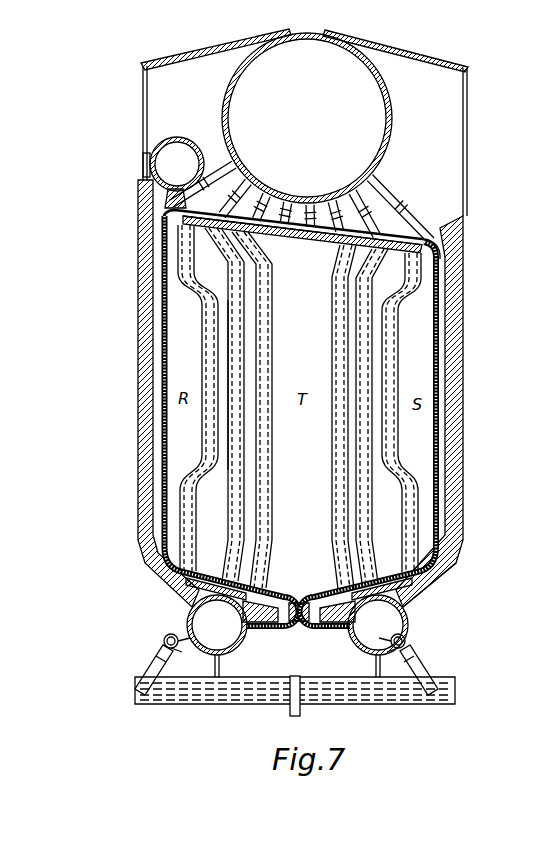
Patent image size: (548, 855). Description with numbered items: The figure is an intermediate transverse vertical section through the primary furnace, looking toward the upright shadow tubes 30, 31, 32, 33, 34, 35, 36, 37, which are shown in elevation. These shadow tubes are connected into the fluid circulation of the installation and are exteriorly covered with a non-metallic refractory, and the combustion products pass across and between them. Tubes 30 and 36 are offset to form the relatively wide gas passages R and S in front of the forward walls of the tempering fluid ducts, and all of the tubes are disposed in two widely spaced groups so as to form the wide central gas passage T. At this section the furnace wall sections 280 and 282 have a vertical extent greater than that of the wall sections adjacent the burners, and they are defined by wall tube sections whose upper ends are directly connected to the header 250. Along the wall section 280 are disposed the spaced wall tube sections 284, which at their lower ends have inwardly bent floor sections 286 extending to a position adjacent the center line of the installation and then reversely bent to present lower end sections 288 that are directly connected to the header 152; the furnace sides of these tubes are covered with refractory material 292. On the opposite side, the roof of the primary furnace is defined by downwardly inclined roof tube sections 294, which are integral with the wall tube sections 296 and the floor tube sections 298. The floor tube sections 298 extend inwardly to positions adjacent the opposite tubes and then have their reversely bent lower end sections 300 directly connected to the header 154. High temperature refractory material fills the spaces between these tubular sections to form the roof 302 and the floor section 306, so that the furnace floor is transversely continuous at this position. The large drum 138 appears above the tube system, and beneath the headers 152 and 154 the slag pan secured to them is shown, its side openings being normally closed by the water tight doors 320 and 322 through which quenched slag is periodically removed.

The steam drum 138 is at (233, 93).
The header 250 is at (180, 137).
The roof tube sections 294 is at (392, 200).
The roof 302 is at (300, 240).
The shadow tube 31 is at (441, 254).
The shadow tube 30 is at (425, 285).
The shadow tube 33 is at (346, 290).
The shadow tube 32 is at (350, 322).
The furnace wall section 280 is at (150, 322).
The wall tube sections 284 is at (165, 360).
The furnace wall section 282 is at (455, 372).
The wall tube sections 296 is at (440, 420).
The shadow tube 35 is at (238, 468).
The shadow tube 34 is at (258, 500).
The shadow tube 36 is at (180, 492).
The shadow tube 37 is at (208, 517).
The floor sections 286 is at (266, 590).
The refractory material 292 is at (280, 593).
The floor section 306 is at (302, 600).
The header 152 is at (187, 622).
The header 154 is at (410, 628).
The floor tube sections 298 is at (424, 592).
The water tight door 320 is at (152, 657).
The water tight door 322 is at (452, 682).
The lower end sections 288 is at (268, 634).
The lower end sections 300 is at (325, 634).